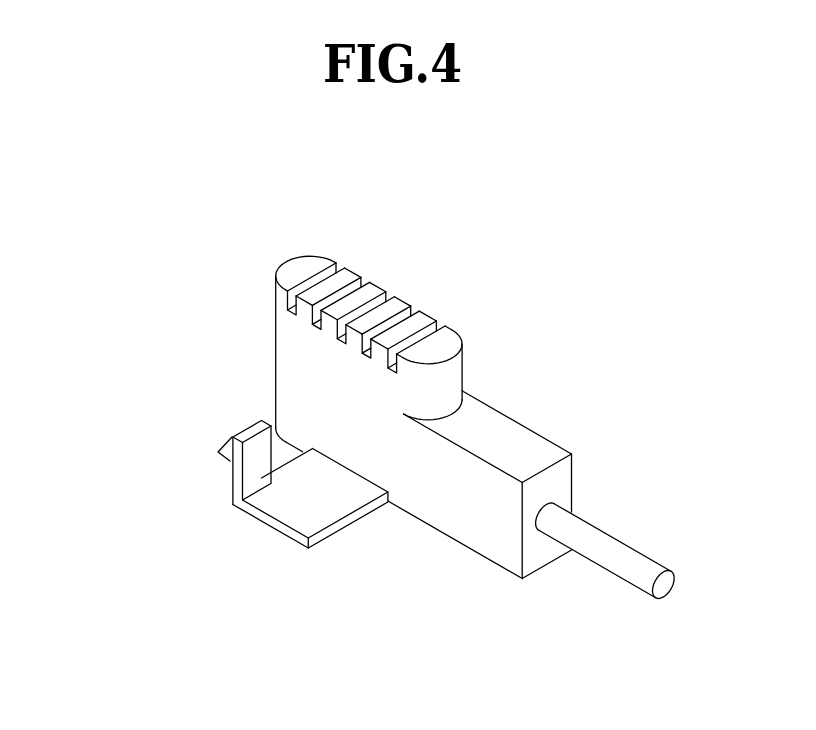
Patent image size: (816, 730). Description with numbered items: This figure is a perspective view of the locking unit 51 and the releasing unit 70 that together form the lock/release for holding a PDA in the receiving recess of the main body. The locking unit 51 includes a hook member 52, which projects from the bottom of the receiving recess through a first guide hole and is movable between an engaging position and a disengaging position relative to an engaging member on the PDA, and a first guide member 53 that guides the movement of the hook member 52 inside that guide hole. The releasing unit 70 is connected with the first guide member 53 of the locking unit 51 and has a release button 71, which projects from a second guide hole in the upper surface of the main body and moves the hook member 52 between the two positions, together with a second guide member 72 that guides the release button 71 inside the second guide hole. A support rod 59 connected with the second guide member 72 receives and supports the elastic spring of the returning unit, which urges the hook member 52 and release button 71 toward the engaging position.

The releasing unit 70 is at (368, 240).
The release button 71 is at (443, 327).
The second guide member 72 is at (528, 442).
The support rod 59 is at (628, 556).
The locking unit 51 is at (222, 477).
The hook member 52 is at (247, 428).
The first guide member 53 is at (303, 519).